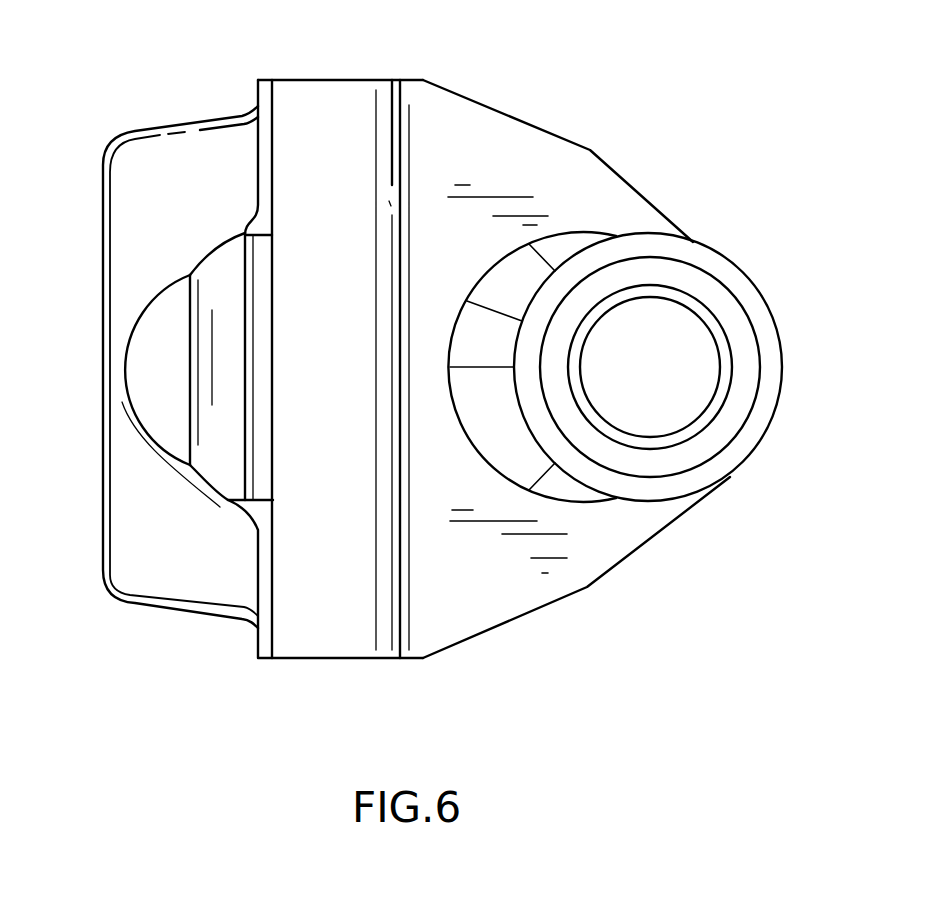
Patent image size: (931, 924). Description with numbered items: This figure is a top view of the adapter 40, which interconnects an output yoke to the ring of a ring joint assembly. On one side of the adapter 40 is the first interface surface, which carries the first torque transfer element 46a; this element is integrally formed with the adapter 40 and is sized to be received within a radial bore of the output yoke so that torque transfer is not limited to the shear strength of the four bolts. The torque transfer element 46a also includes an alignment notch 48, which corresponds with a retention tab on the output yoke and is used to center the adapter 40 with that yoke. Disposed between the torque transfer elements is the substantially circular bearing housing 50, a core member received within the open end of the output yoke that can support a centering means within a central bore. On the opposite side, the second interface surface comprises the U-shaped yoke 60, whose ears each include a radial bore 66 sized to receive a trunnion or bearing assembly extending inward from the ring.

The adapter 40 is at (370, 680).
The first torque transfer element 46a is at (150, 366).
The alignment notch 48 is at (188, 313).
The bearing housing 50 is at (117, 497).
The U-shaped yoke 60 is at (783, 372).
The radial bore 66 is at (695, 432).